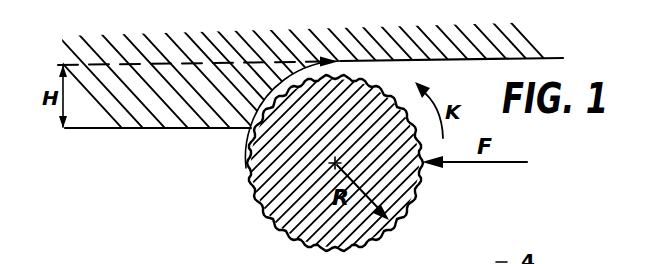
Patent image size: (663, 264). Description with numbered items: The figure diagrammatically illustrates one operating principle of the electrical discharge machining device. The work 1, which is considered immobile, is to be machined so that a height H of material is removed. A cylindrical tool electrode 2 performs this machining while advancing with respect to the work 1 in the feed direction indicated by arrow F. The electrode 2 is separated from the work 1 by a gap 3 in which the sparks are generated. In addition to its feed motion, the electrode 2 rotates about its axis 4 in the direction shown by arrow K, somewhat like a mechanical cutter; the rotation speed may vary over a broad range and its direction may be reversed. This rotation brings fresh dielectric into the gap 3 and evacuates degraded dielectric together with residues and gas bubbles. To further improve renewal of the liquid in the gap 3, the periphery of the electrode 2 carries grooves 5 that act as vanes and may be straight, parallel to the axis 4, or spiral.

The work 1 is at (128, 117).
The cylindrical tool electrode 2 is at (414, 197).
The gap 3 is at (246, 168).
The axis 4 is at (343, 161).
The grooves 5 is at (362, 248).